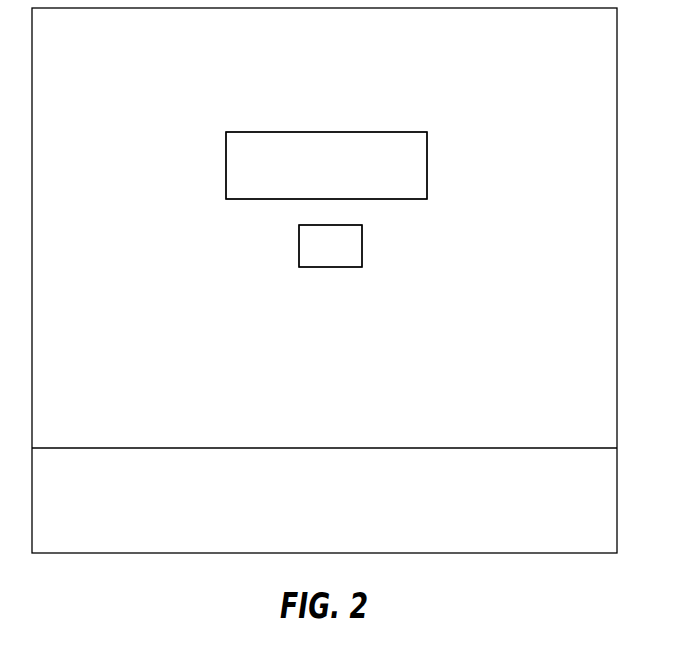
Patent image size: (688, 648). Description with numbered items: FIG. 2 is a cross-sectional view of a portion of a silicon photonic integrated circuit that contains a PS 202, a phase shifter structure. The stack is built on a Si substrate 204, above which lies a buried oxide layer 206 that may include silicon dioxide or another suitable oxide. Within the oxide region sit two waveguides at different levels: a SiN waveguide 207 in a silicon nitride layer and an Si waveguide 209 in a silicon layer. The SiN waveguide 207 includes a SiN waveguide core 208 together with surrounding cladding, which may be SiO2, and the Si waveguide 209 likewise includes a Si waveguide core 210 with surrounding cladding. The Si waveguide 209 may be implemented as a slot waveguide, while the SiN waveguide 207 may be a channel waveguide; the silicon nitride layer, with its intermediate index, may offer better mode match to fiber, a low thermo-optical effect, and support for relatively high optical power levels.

The PS 202 is at (433, 101).
The Si substrate 204 is at (338, 530).
The buried oxide layer 206 is at (338, 427).
The SiN waveguide 207 is at (228, 131).
The SiN waveguide core 208 is at (242, 169).
The Si waveguide 209 is at (300, 275).
The Si waveguide core 210 is at (299, 247).